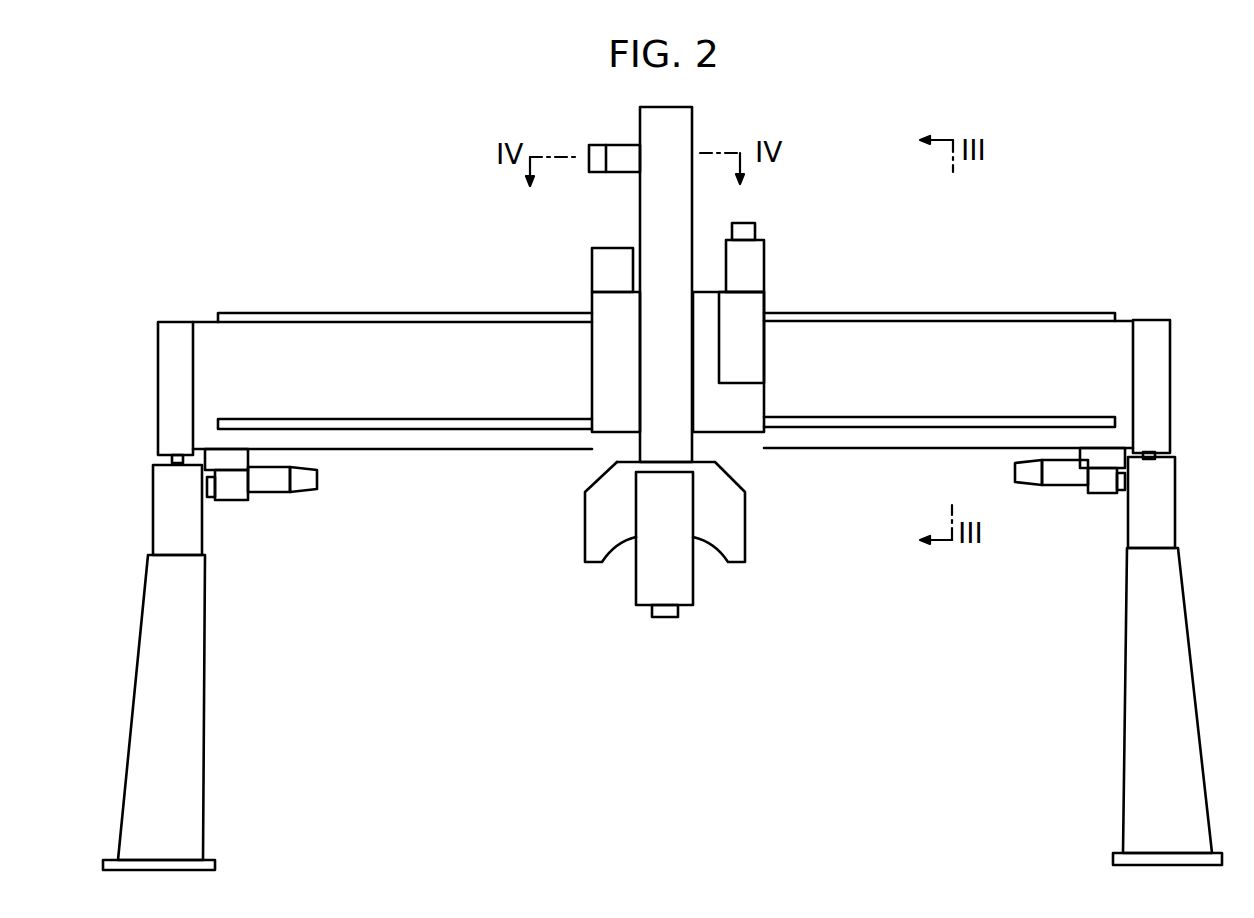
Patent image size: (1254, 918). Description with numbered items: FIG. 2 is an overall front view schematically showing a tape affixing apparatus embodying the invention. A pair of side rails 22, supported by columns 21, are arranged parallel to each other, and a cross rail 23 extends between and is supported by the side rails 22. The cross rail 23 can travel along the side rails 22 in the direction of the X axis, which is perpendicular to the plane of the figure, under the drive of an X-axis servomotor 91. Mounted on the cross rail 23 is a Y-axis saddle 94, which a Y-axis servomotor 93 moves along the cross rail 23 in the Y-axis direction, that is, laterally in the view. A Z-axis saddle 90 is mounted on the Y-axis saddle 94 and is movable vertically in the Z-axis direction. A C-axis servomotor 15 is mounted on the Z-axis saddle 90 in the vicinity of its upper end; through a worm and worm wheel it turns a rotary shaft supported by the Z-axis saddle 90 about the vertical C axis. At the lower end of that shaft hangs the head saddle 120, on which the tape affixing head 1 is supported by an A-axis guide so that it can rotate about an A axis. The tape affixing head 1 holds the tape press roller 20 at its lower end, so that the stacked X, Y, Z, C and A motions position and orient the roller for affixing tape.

The tape affixing head 1 is at (638, 595).
The C-axis servomotor 15 is at (590, 157).
The tape press roller 20 is at (676, 612).
The columns 21 is at (197, 780).
The side rails 22 is at (163, 523).
The cross rail 23 is at (258, 333).
The Z-axis saddle 90 is at (696, 119).
The X-axis servomotor 91 is at (307, 485).
The Y-axis servomotor 93 is at (752, 250).
The Y-axis saddle 94 is at (742, 422).
The head saddle 120 is at (585, 507).